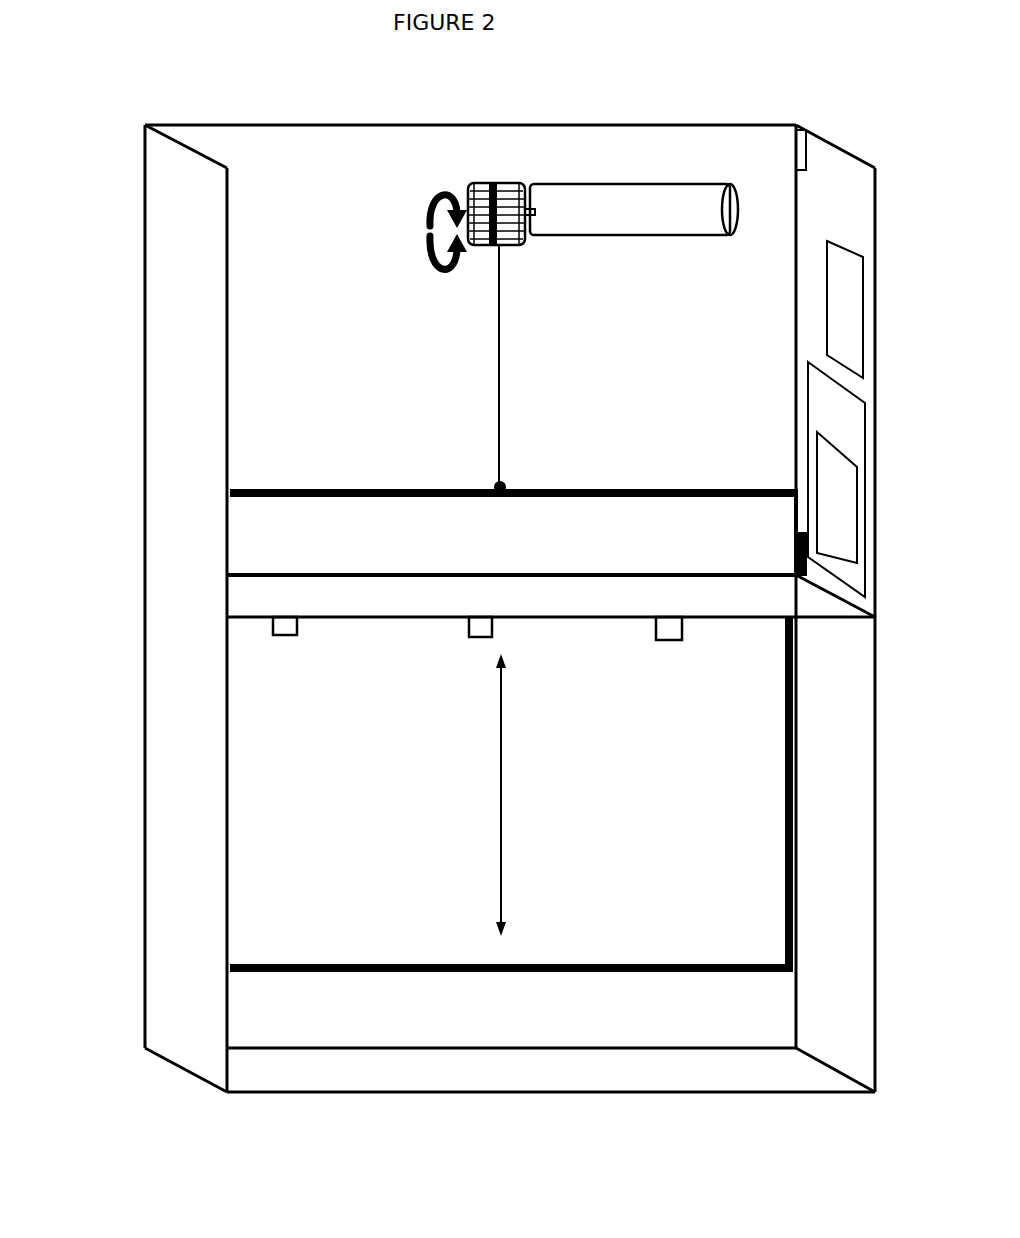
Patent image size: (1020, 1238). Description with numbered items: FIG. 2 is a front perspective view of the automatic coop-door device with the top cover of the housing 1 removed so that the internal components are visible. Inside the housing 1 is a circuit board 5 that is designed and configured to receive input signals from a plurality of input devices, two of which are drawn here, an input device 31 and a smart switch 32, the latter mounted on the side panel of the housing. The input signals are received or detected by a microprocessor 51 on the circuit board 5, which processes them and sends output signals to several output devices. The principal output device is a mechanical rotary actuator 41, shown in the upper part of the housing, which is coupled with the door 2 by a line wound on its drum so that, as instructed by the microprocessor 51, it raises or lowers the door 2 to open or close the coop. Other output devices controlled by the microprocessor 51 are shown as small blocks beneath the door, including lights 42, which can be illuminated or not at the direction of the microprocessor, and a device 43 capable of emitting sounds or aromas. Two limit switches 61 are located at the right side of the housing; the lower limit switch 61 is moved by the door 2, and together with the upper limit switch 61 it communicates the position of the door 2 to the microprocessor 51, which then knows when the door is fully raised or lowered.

The housing 1 is at (185, 175).
The door 2 is at (285, 532).
The input device 31 is at (270, 643).
The smart switch 32 is at (838, 298).
The actuator 41 is at (595, 212).
The lights 42 is at (468, 637).
The devices capable of emitting sounds or aromas 43 is at (682, 632).
The circuit board 5 is at (848, 437).
The microprocessor 51 is at (848, 497).
The limit switches 61 is at (806, 138).